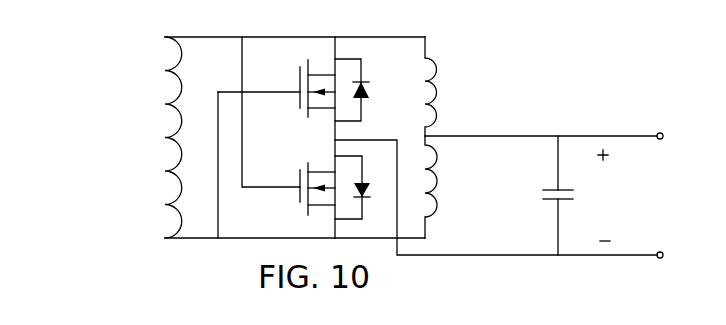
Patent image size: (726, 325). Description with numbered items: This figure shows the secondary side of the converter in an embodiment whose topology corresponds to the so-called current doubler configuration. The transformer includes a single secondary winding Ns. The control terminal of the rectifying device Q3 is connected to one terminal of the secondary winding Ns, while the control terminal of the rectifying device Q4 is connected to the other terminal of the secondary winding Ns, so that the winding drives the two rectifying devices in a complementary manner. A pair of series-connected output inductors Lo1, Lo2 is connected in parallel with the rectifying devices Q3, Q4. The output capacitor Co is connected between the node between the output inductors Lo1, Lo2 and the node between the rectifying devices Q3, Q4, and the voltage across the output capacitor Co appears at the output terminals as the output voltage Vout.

The secondary winding Ns is at (153, 137).
The rectifying device Q3 is at (318, 82).
The rectifying device Q4 is at (319, 194).
The output inductor Lo1 is at (453, 86).
The output inductor Lo2 is at (454, 187).
The output capacitor Co is at (580, 195).
The output voltage terminals Vout is at (655, 195).